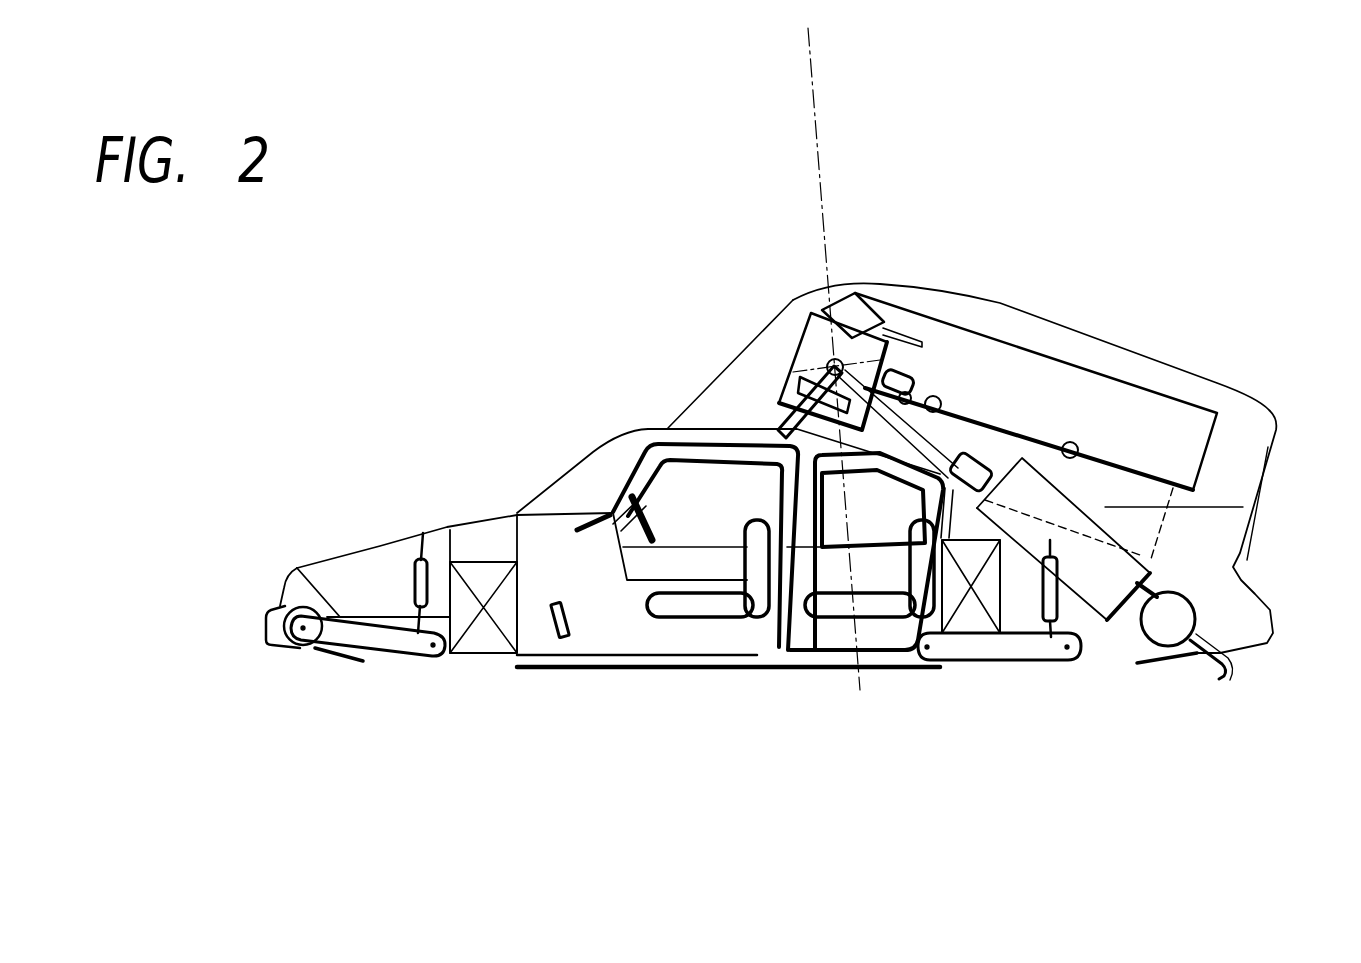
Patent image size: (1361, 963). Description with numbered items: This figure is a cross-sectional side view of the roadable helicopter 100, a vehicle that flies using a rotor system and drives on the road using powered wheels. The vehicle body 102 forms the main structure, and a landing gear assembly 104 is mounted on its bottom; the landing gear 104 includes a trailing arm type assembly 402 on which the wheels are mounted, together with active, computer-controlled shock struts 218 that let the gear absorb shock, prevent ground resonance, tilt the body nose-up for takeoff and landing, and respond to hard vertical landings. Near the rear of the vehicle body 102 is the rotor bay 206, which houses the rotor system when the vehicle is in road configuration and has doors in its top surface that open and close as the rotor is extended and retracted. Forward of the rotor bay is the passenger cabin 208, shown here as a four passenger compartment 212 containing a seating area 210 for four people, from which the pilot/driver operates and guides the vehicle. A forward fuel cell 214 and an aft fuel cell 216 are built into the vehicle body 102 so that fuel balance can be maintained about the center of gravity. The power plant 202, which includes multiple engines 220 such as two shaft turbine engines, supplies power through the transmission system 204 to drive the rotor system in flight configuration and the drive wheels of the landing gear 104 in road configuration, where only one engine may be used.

The roadable helicopter 100 is at (620, 249).
The vehicle body 102 is at (1253, 600).
The landing gear assembly 104 is at (408, 640).
The power plant 202 is at (1090, 613).
The transmission system 204 is at (820, 333).
The rotor bay 206 is at (1205, 407).
The passenger cabin 208 is at (647, 560).
The seating area 210 is at (840, 603).
The four passenger compartment 212 is at (678, 478).
The forward fuel cell 214 is at (492, 655).
The aft fuel cell 216 is at (962, 627).
The shock struts 218 is at (418, 575).
The engines 220 is at (1102, 595).
The trailing arm type assembly 402 is at (335, 658).